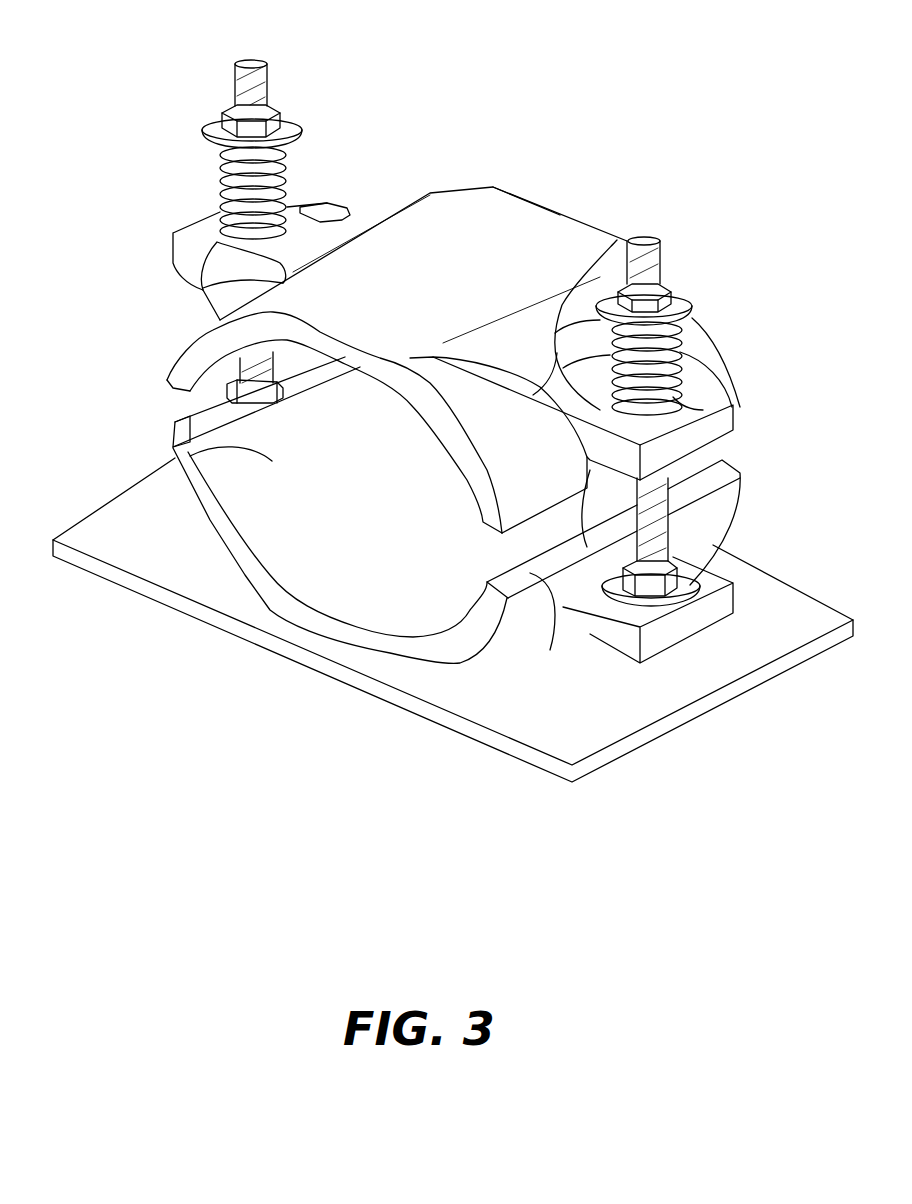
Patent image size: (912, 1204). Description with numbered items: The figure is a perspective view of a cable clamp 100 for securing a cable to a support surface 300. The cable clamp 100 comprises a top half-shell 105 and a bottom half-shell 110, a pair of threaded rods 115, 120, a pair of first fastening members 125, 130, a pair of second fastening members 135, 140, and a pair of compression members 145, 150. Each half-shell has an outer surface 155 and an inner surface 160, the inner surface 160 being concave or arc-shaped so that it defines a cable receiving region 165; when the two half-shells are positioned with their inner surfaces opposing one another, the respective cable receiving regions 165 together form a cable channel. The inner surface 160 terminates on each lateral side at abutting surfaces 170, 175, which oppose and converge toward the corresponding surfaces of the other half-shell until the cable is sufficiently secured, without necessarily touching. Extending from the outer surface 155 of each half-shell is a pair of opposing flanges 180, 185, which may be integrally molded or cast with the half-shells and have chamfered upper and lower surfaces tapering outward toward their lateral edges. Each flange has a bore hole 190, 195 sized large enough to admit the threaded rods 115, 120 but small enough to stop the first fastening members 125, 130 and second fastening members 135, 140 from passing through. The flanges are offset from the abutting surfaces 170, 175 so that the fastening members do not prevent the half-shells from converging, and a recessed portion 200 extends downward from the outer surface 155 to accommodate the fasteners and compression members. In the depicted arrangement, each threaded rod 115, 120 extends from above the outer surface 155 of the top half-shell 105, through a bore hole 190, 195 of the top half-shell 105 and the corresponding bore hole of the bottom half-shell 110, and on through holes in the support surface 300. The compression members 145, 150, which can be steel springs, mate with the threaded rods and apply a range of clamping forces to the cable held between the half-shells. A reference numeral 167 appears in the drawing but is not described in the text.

The cable clamp 100 is at (668, 117).
The top half-shell 105 is at (437, 247).
The bottom half-shell 110 is at (713, 507).
The threaded rod 115 is at (658, 253).
The threaded rod 120 is at (253, 72).
The first fastening member 125 is at (667, 578).
The first fastening member 130 is at (227, 398).
The second fastening member 135 is at (655, 303).
The second fastening member 140 is at (237, 125).
The compression member 145 is at (683, 353).
The compression member 150 is at (227, 210).
The outer surface 155 is at (527, 219).
The inner surface 160 is at (243, 537).
The cable receiving region 165 is at (367, 543).
The inner rim 167 is at (190, 463).
The abutting surface 170 is at (633, 517).
The abutting surface 175 is at (175, 437).
The flange 180 is at (703, 393).
The flange 185 is at (203, 290).
The bore hole 190 is at (733, 406).
The bore hole 195 is at (307, 208).
The recessed portion 200 is at (606, 239).
The support surface 300 is at (563, 732).